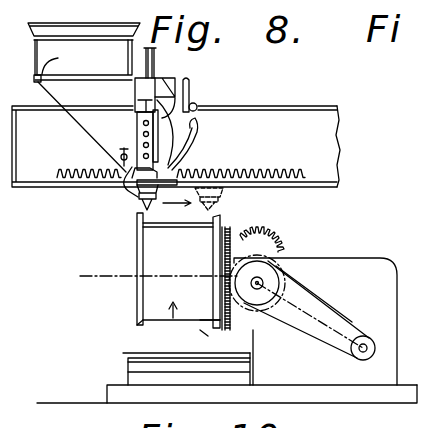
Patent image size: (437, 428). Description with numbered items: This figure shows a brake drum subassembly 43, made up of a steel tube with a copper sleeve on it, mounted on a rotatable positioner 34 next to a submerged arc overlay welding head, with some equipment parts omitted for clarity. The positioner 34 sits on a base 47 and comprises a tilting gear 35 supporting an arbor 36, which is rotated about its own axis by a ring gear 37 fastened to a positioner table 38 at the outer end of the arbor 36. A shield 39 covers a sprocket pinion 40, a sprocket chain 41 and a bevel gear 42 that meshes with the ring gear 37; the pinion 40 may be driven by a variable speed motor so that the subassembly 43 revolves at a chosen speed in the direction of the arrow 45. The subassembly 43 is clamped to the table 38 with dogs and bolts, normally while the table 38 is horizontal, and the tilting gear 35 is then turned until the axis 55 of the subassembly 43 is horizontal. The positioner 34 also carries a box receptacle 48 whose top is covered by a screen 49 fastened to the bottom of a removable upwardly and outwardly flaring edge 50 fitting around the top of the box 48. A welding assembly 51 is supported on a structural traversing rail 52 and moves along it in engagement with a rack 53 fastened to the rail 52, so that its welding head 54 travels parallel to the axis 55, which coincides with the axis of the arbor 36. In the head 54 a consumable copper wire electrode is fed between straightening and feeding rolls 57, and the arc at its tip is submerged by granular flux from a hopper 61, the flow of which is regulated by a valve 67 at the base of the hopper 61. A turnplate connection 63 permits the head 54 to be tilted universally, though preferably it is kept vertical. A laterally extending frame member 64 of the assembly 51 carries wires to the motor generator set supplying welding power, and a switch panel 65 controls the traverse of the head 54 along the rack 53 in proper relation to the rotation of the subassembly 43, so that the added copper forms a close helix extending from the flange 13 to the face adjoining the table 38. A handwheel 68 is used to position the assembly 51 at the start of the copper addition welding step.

The flange 13 is at (138, 243).
The positioner 34 is at (322, 258).
The tilting gear 35 is at (268, 247).
The arbor 36 is at (236, 250).
The ring gear 37 is at (222, 227).
The positioner table 38 is at (251, 327).
The shield 39 is at (334, 304).
The sprocket pinion 40 is at (317, 350).
The sprocket chain 41 is at (320, 296).
The bevel gear 42 is at (279, 283).
The brake drum subassembly 43 is at (150, 323).
The arrow 45 is at (185, 324).
The base 47 is at (401, 385).
The box receptacle 48 is at (138, 370).
The screen 49 is at (150, 378).
The flaring edge 50 is at (128, 353).
The welding assembly 51 is at (108, 103).
The traversing rail 52 is at (278, 115).
The rack 53 is at (243, 170).
The welding head 54 is at (135, 196).
The axis 55 is at (110, 278).
The straightening and feeding rolls 57 is at (158, 64).
The hopper 61 is at (34, 82).
The turnplate connection 63 is at (183, 128).
The frame member 64 is at (436, 119).
The switch panel 65 is at (436, 146).
The valve 67 is at (124, 152).
The handwheel 68 is at (188, 80).